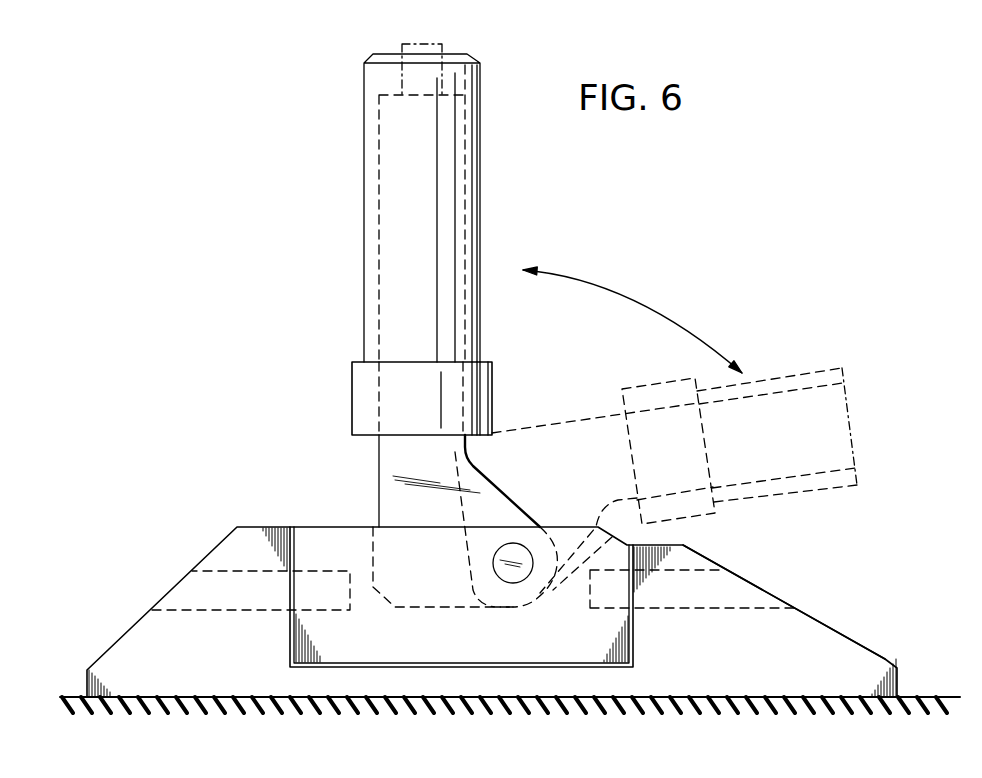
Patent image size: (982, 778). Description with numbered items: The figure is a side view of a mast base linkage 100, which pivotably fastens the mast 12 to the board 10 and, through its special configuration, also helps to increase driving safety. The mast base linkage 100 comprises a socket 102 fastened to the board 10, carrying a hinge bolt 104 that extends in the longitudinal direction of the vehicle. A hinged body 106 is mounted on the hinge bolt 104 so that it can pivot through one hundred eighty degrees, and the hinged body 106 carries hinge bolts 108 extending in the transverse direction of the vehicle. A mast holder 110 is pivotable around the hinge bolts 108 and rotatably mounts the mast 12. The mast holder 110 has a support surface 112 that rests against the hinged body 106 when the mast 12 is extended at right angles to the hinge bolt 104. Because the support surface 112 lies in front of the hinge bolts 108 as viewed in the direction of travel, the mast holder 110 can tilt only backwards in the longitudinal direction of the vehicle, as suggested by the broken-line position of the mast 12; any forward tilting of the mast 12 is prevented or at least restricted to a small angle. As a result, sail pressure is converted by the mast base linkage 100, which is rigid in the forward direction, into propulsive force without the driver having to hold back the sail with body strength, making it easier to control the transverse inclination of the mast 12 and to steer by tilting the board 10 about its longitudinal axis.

The board 10 is at (926, 700).
The mast 12 is at (474, 184).
The mast base linkage 100 is at (250, 500).
The socket 102 is at (808, 638).
The hinge bolt 104 is at (216, 580).
The hinged body 106 is at (330, 540).
The hinge bolts 108 is at (513, 575).
The mast holder 110 is at (385, 455).
The support surface 112 is at (415, 605).